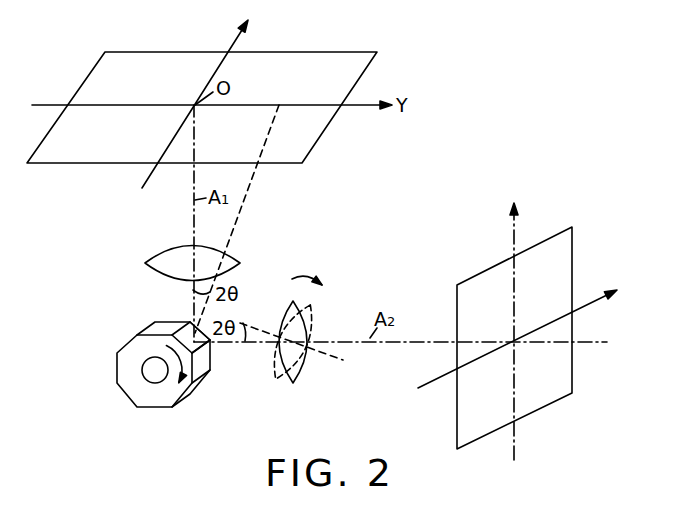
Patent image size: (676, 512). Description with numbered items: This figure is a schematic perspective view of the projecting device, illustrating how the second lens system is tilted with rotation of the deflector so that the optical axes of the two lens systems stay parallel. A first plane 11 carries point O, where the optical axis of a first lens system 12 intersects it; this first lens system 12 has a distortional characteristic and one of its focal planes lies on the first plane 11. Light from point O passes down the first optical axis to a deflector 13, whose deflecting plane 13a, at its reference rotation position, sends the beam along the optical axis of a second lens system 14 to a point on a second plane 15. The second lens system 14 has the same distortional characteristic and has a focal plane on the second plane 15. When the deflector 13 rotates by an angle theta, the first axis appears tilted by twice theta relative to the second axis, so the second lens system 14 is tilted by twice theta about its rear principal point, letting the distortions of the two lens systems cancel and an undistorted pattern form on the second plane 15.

The first plane 11 is at (365, 65).
The first lens system 12 is at (232, 255).
The deflector 13 is at (130, 390).
The deflecting plane 13a is at (206, 350).
The second lens system 14 is at (305, 372).
The second plane 15 is at (565, 396).